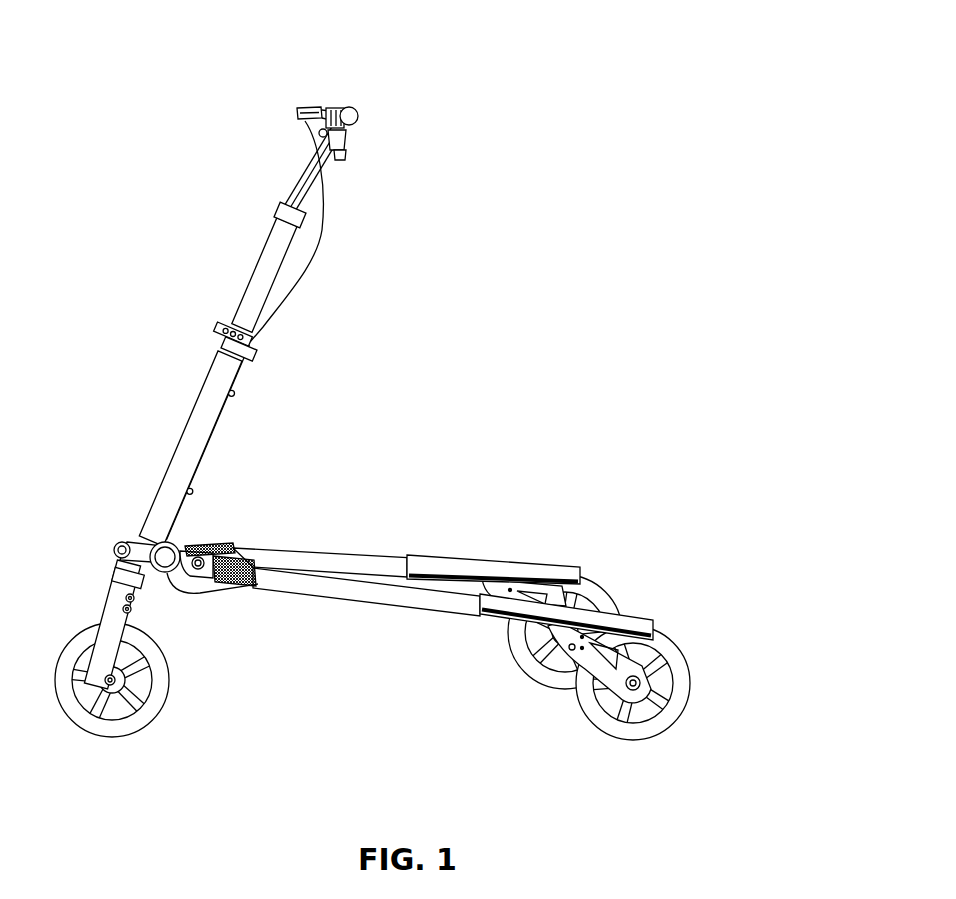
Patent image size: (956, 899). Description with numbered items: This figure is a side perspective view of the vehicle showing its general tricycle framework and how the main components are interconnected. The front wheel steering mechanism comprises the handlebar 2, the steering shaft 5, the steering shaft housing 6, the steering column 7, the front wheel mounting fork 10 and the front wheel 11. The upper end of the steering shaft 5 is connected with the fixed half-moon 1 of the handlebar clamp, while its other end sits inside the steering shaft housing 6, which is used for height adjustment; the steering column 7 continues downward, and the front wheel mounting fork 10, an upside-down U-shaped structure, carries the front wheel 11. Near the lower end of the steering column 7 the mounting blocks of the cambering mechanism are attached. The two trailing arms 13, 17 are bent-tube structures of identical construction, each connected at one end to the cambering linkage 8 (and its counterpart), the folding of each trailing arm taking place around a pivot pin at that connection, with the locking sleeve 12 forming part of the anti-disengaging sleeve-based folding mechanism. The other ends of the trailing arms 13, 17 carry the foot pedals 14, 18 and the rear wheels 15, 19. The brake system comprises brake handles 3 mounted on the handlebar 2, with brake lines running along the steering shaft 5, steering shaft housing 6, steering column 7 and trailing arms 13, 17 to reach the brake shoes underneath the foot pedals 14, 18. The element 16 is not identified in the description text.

The fixed half-moon 1 is at (350, 146).
The handlebar 2 is at (356, 96).
The brake handles 3 is at (308, 96).
The steering shaft 5 is at (294, 170).
The steering shaft housing 6 is at (241, 286).
The steering column 7 is at (195, 381).
The cambering linkage 8 is at (138, 533).
The front wheel mounting fork 10 is at (101, 604).
The front wheel 11 is at (57, 643).
The locking sleeve 12 is at (249, 593).
The trailing arm 13 is at (359, 607).
The foot pedal 14 is at (509, 615).
The rear wheel 15 is at (679, 728).
The front mounting bracket 16 is at (231, 543).
The trailing arm 17 is at (360, 549).
The foot pedal 18 is at (464, 548).
The rear wheel 19 is at (615, 576).